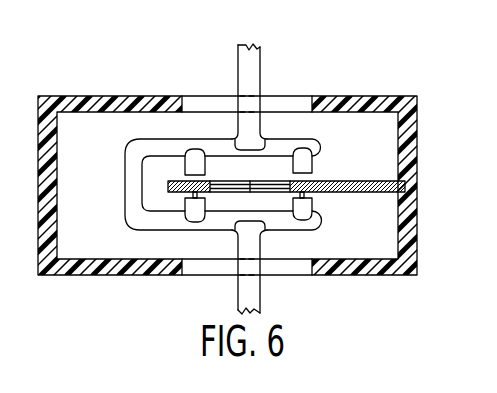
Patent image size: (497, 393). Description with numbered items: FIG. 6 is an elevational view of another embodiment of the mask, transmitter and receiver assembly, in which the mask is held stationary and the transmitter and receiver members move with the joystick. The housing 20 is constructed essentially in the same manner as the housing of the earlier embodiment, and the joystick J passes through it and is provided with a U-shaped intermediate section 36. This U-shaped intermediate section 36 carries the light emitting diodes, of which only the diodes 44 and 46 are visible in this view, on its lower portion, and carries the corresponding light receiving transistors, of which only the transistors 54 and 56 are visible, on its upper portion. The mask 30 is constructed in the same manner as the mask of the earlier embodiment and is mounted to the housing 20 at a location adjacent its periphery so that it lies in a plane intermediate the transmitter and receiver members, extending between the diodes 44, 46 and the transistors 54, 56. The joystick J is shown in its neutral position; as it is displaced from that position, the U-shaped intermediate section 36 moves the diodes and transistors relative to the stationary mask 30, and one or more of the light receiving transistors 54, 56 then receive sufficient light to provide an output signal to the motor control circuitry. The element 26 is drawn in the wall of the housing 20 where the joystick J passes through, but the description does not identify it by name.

The housing 20 is at (102, 96).
The plug / bushing in housing wall (26') 26 is at (296, 101).
The mask 30 is at (366, 182).
The U-shaped intermediate section 36 is at (126, 172).
The light emitting diode 44 is at (186, 209).
The light emitting diode 46 is at (316, 216).
The light receiving transistor 54 is at (186, 157).
The light receiving transistor 56 is at (313, 154).
The joystick J is at (283, 36).